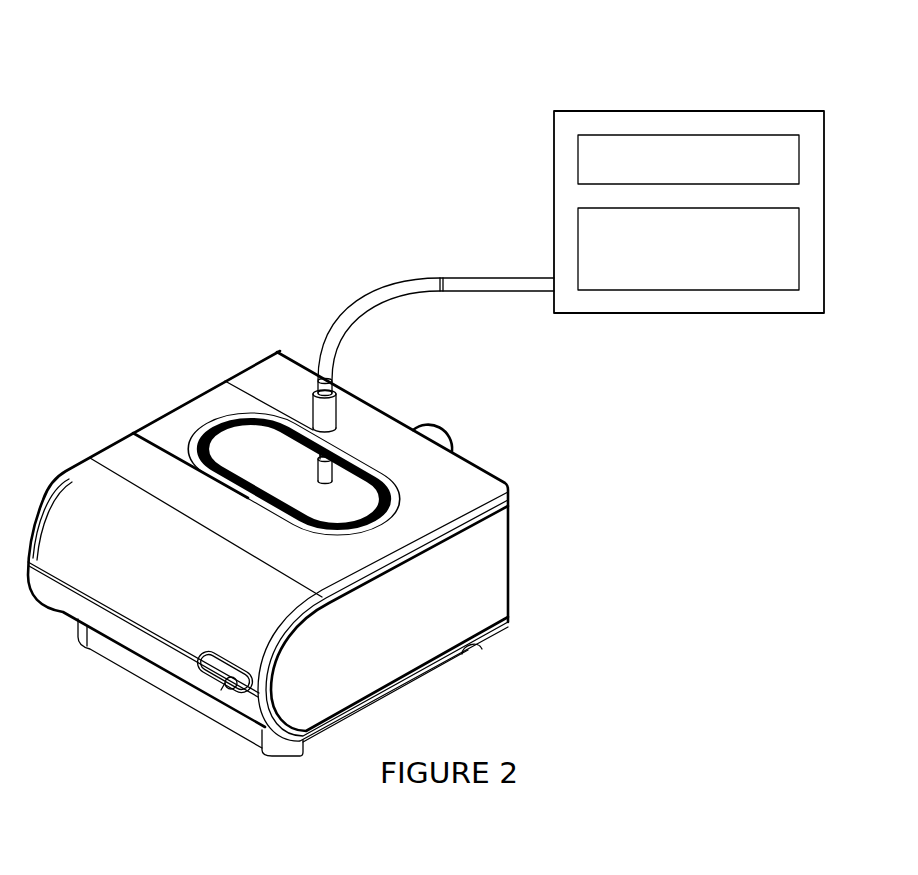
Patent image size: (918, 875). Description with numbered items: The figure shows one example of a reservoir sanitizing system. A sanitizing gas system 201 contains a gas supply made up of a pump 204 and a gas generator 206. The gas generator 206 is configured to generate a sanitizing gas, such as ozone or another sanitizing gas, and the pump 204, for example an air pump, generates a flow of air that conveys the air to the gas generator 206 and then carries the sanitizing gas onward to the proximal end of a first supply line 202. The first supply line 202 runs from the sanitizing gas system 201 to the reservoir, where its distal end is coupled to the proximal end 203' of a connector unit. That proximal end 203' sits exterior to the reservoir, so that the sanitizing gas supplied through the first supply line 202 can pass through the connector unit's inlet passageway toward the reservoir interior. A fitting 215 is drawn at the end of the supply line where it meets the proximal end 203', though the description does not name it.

The sanitizing gas system 201 is at (678, 110).
The first supply line 202 is at (455, 277).
The pump 204 is at (592, 133).
The gas generator 206 is at (577, 220).
The nozzle connector 215 is at (331, 450).
The proximal end of the connector unit 203' is at (360, 474).